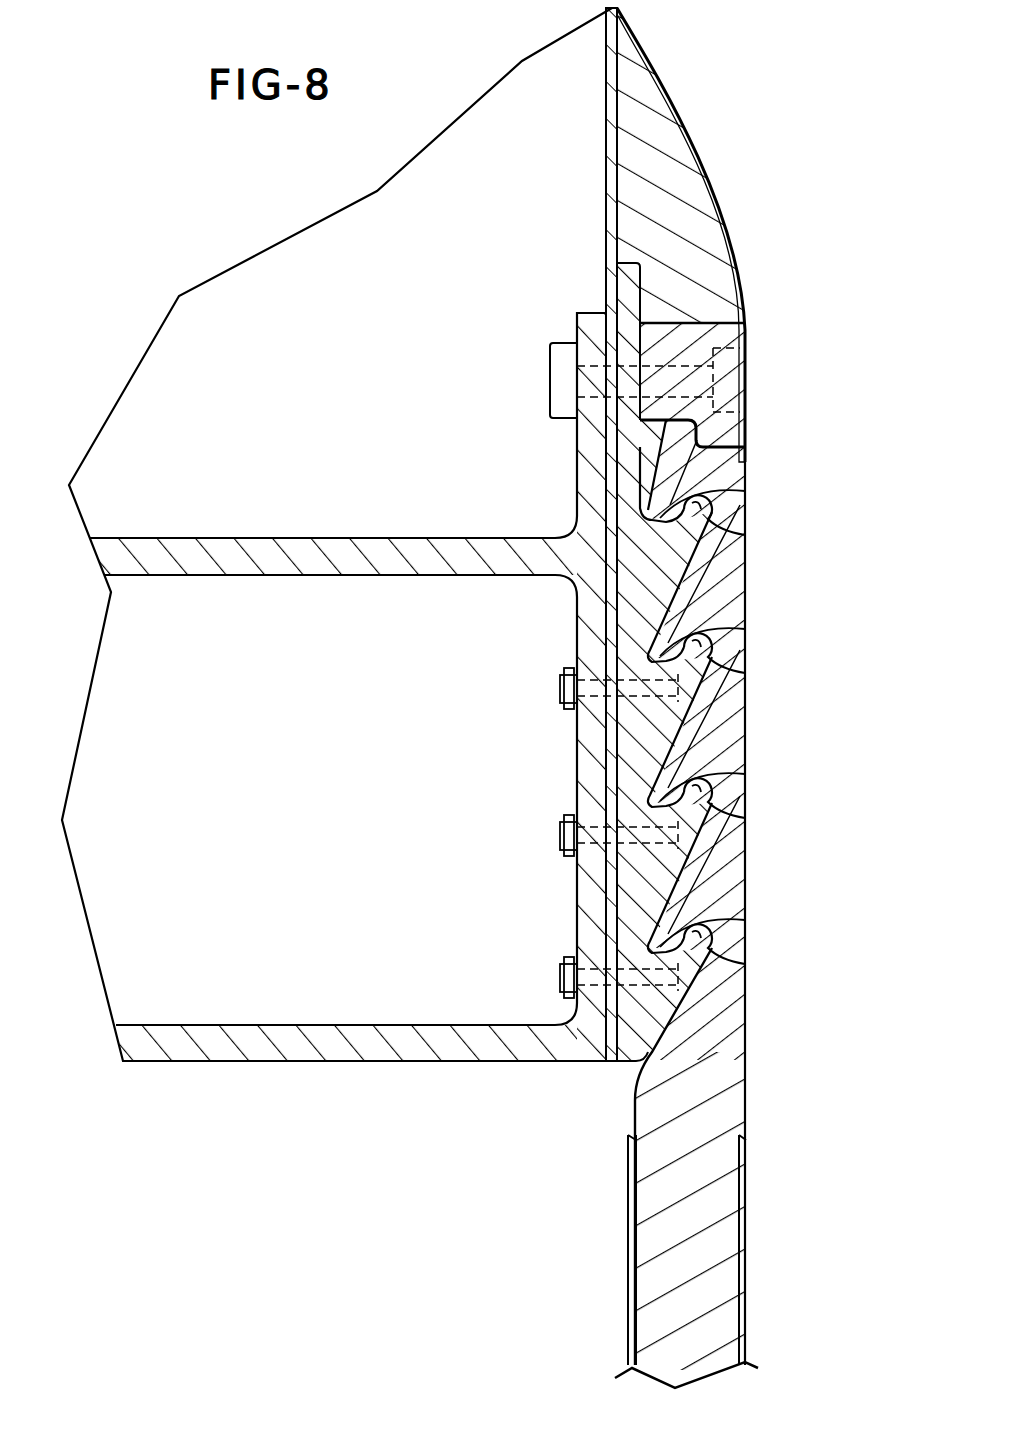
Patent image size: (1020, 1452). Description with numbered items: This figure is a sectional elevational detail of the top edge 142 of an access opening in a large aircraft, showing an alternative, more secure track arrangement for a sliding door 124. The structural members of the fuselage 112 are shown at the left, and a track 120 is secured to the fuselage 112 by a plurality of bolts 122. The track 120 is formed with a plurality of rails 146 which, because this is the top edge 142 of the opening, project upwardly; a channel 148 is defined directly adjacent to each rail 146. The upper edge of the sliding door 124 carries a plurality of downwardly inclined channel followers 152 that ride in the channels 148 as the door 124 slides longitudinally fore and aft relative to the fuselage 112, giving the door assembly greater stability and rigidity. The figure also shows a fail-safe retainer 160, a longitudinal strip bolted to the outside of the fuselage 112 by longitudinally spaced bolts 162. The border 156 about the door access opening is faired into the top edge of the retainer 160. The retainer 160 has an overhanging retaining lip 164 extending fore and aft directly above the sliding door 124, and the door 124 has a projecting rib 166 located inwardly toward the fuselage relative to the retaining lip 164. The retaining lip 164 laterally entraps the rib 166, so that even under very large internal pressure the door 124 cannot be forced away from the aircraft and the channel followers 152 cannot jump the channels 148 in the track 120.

The structural members of the fuselage 112 is at (396, 1068).
The track 120 is at (598, 630).
The bolts 122 is at (560, 703).
The sliding door 124 is at (758, 1218).
The top edge of an access opening 142 is at (600, 1066).
The rails 146 is at (722, 548).
The channels 148 is at (710, 512).
The channel followers 152 is at (745, 480).
The border 156 is at (702, 160).
The fail-safe retainer 160 is at (690, 312).
The bolts 162 is at (549, 388).
The retaining lip 164 is at (728, 430).
The projecting ribs 166 is at (663, 432).